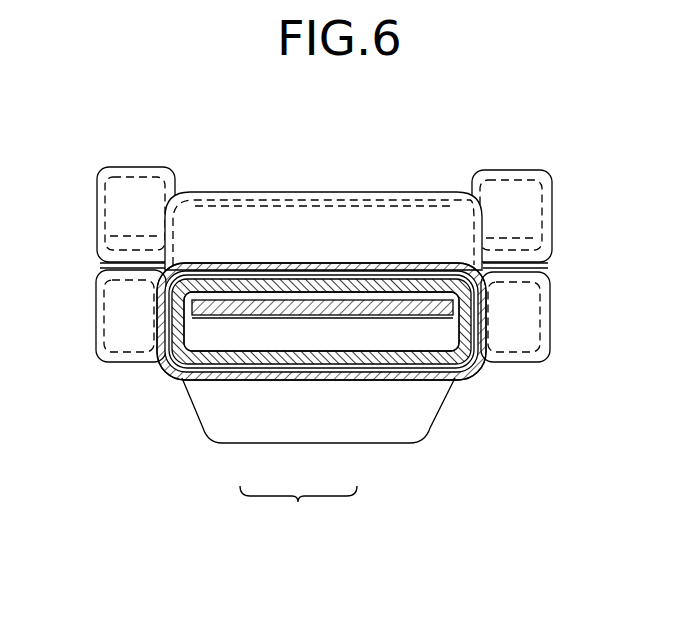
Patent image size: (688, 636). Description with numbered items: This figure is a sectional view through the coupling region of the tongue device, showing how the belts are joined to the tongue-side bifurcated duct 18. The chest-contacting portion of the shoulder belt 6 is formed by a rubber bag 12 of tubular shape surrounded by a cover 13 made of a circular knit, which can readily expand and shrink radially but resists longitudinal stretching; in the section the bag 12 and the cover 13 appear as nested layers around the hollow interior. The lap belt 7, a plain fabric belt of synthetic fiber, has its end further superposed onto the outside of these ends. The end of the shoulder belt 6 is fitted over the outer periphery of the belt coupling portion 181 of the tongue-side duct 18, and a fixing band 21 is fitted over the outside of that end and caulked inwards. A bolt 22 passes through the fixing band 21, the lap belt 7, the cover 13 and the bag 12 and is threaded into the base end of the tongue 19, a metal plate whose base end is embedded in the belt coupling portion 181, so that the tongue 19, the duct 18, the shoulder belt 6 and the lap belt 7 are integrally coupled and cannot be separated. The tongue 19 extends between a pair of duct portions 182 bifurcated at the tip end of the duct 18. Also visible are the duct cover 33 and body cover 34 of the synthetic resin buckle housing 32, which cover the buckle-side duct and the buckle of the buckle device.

The shoulder belt 6 is at (298, 509).
The lap belt 7 is at (350, 346).
The rubber bag 12 is at (312, 365).
The cover 13 is at (270, 372).
The tongue-side bifurcated duct 18 is at (178, 410).
The belt coupling portion 181 is at (418, 352).
The duct portions 182 is at (577, 378).
The tongue 19 is at (278, 311).
The fixing band 21 is at (472, 379).
The bolt 22 is at (320, 318).
The buckle housing 32 is at (323, 173).
The duct cover 33 is at (122, 167).
The body cover 34 is at (264, 193).